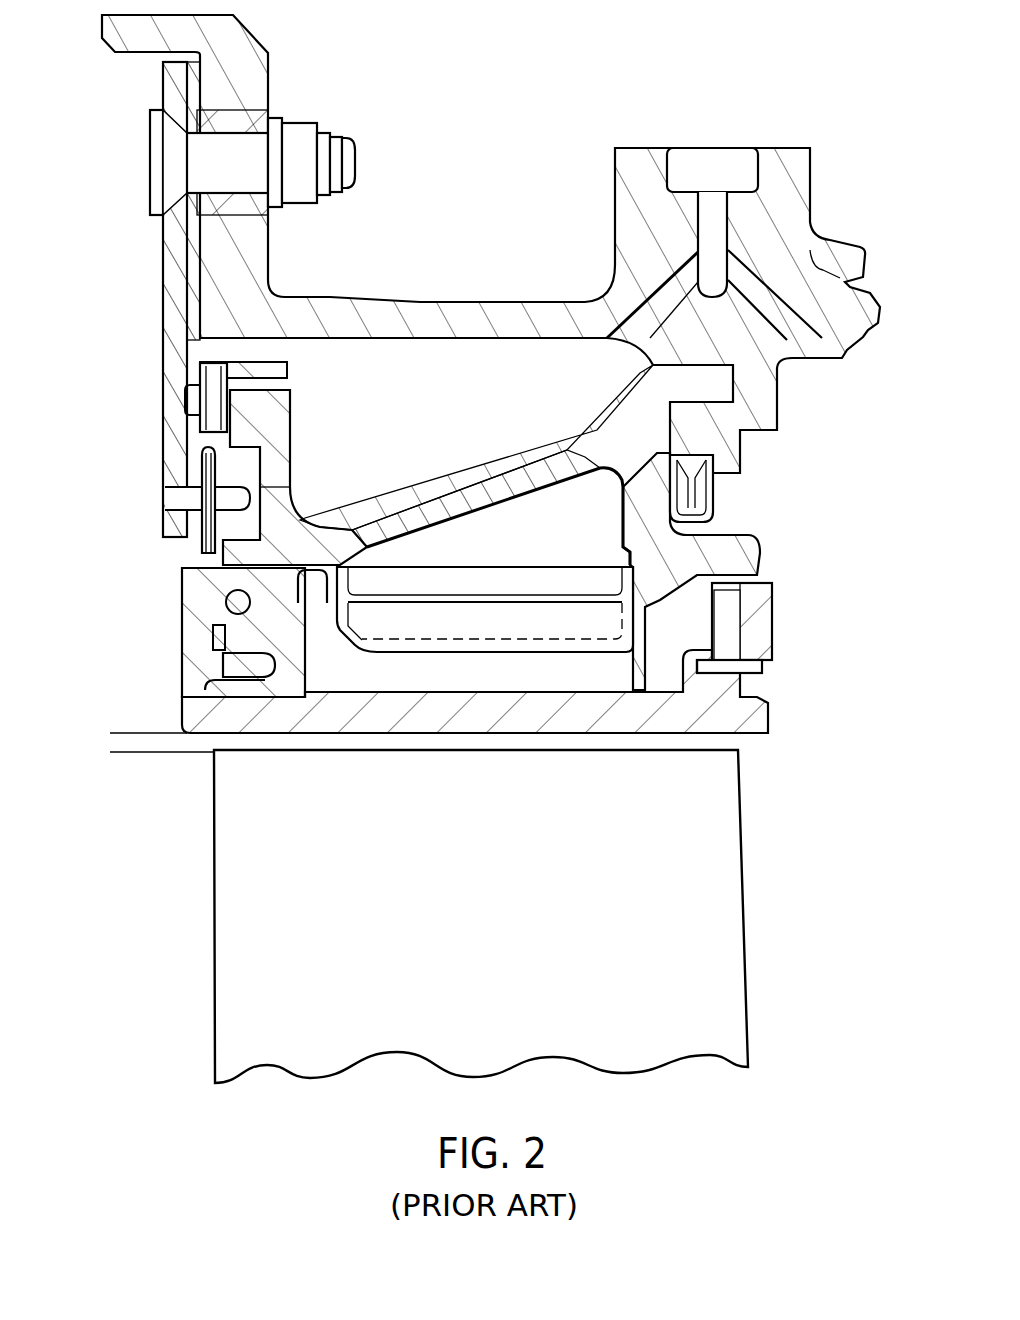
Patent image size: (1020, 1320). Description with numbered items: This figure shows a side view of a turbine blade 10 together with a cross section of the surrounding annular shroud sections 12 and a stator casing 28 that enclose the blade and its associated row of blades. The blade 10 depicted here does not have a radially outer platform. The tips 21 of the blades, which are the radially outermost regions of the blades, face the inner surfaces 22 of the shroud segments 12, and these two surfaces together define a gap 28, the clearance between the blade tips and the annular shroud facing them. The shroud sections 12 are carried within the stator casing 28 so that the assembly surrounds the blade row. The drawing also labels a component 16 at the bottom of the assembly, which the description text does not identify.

The blade 10 is at (168, 968).
The annular shroud sections 12 is at (780, 696).
The rotating component 16 is at (480, 932).
The tips 21 is at (653, 750).
The inner surfaces 22 is at (687, 733).
The gap 28 is at (123, 752).